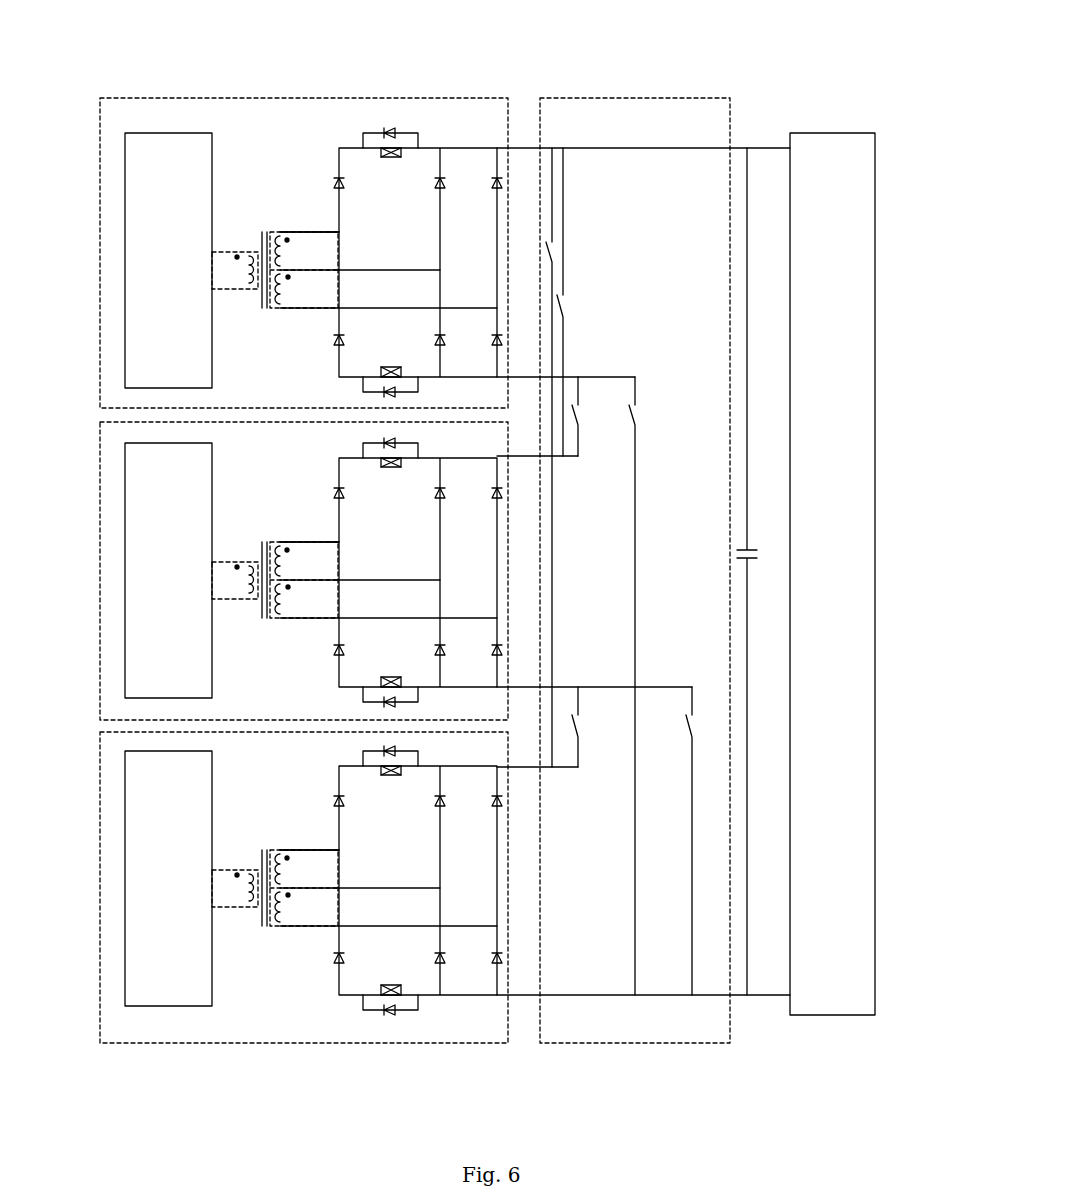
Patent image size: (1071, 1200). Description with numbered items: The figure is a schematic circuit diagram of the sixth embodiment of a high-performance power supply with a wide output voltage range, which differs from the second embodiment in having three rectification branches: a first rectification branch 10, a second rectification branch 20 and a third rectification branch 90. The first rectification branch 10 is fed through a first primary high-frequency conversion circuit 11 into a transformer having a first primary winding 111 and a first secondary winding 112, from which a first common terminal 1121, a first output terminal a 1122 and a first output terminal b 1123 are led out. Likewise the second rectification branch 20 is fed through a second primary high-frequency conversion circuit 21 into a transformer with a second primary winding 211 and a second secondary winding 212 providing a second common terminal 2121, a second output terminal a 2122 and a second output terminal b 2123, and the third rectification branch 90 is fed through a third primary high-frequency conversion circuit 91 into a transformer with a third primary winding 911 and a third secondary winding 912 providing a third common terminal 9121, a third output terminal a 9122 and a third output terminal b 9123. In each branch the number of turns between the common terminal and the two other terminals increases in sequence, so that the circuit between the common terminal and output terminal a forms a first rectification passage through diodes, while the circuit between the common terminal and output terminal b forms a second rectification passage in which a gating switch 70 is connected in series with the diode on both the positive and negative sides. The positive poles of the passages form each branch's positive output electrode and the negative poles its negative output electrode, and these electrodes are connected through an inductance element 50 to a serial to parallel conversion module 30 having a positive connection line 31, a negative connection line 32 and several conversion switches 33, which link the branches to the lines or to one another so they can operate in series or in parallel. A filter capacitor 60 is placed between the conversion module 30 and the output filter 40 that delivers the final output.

The first rectification branch 10 is at (172, 98).
The first primary high-frequency conversion circuit 11 is at (145, 192).
The first primary winding 111 is at (250, 252).
The first secondary winding 112 is at (282, 232).
The first common terminal 1121 is at (322, 310).
The first output terminal a 1122 is at (300, 283).
The first output terminal b 1123 is at (307, 232).
The second rectification branch 20 is at (100, 633).
The second primary high-frequency conversion circuit 21 is at (145, 540).
The second primary winding 211 is at (249, 562).
The second secondary winding 212 is at (281, 542).
The second common terminal 2121 is at (320, 620).
The second output terminal a 2122 is at (300, 593).
The second output terminal b 2123 is at (308, 542).
The third rectification branch 90 is at (170, 1043).
The third primary high-frequency conversion circuit 91 is at (145, 840).
The third primary winding 911 is at (250, 870).
The third secondary winding 912 is at (282, 850).
The third common terminal 9121 is at (320, 928).
The third output terminal a 9122 is at (298, 903).
The third output terminal b 9123 is at (310, 850).
The serial to parallel conversion module 30 is at (608, 98).
The positive connection line 31 is at (668, 148).
The negative connection line 32 is at (605, 995).
The conversion switch 33 is at (552, 245).
The output filter 40 is at (855, 310).
The inductance element 50 is at (522, 148).
The filter capacitor 60 is at (760, 553).
The gating switch 70 is at (405, 160).